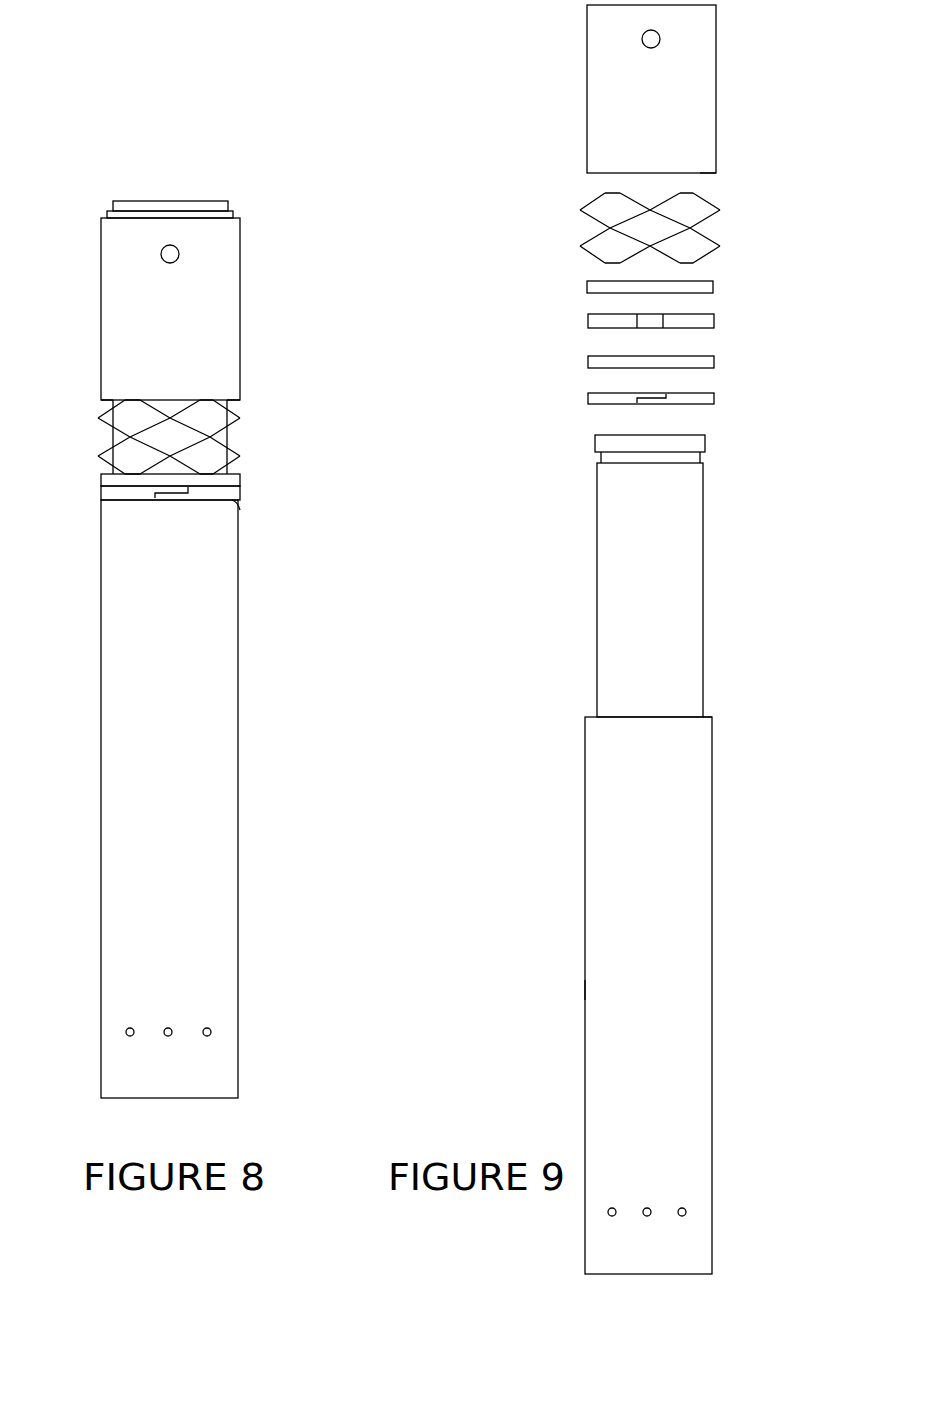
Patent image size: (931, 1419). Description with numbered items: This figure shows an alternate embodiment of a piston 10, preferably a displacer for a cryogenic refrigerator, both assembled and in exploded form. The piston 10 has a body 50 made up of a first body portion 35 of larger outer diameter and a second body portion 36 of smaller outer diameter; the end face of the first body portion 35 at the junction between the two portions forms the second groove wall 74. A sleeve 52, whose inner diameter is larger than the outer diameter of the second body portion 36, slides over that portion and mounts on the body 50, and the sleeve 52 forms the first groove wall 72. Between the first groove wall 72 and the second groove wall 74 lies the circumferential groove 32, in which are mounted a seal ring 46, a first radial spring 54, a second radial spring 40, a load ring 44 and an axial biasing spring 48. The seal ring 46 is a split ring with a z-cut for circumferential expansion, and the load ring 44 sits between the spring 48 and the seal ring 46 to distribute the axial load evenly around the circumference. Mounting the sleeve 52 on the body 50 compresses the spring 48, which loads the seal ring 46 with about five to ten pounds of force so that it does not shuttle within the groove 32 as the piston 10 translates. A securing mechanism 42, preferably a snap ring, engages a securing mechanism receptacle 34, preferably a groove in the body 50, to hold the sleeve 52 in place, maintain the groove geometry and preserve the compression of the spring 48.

In FIG. 8, the piston 10 is at (355, 170).
In FIG. 9, the piston 10 is at (776, 193).
In FIG. 8, the circumferential groove 32 is at (245, 436).
In FIG. 9, the securing mechanism receptacle 34 is at (705, 458).
In FIG. 9, the first body portion 35 is at (585, 990).
In FIG. 9, the second body portion 36 is at (703, 587).
In FIG. 9, the second radial spring 40 is at (714, 359).
In FIG. 8, the securing mechanism 42 is at (235, 212).
In FIG. 8, the load ring 44 is at (250, 481).
In FIG. 9, the load ring 44 is at (715, 284).
In FIG. 8, the seal ring 46 is at (88, 505).
In FIG. 9, the seal ring 46 is at (588, 397).
In FIG. 8, the spring 48 is at (93, 447).
In FIG. 9, the spring 48 is at (712, 218).
In FIG. 8, the body 50 is at (244, 654).
In FIG. 9, the body 50 is at (718, 822).
In FIG. 8, the sleeve 52 is at (246, 276).
In FIG. 9, the sleeve 52 is at (587, 88).
In FIG. 9, the first radial spring 54 is at (588, 321).
In FIG. 8, the first groove wall 72 is at (106, 401).
In FIG. 9, the first groove wall 72 is at (708, 174).
In FIG. 8, the second groove wall 74 is at (233, 502).
In FIG. 9, the second groove wall 74 is at (712, 717).